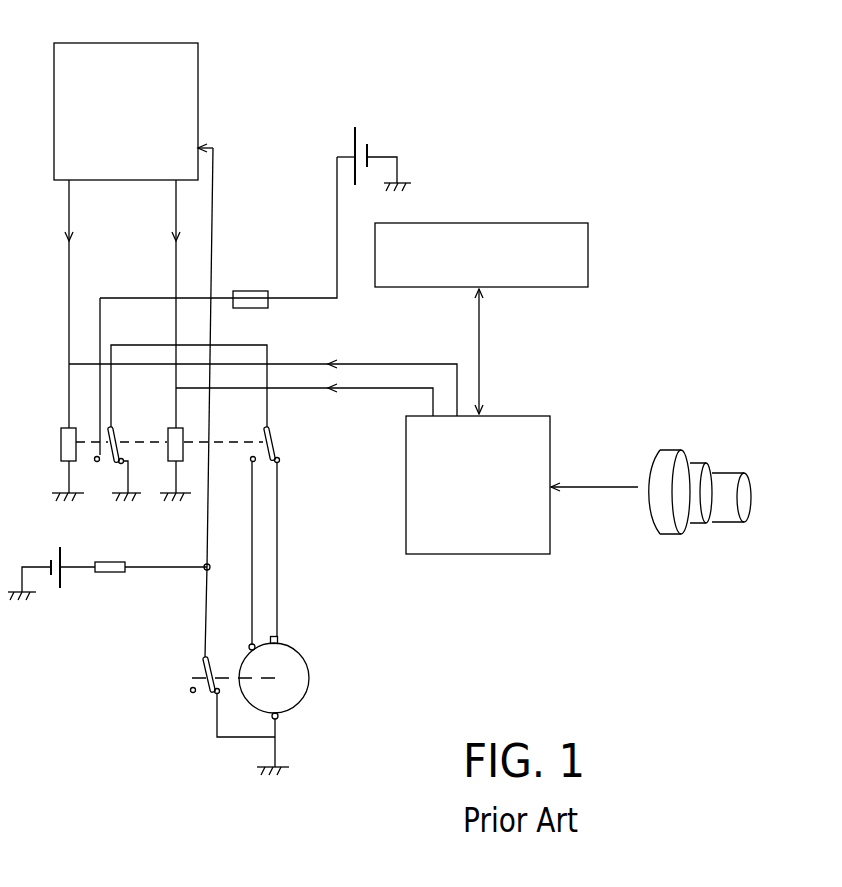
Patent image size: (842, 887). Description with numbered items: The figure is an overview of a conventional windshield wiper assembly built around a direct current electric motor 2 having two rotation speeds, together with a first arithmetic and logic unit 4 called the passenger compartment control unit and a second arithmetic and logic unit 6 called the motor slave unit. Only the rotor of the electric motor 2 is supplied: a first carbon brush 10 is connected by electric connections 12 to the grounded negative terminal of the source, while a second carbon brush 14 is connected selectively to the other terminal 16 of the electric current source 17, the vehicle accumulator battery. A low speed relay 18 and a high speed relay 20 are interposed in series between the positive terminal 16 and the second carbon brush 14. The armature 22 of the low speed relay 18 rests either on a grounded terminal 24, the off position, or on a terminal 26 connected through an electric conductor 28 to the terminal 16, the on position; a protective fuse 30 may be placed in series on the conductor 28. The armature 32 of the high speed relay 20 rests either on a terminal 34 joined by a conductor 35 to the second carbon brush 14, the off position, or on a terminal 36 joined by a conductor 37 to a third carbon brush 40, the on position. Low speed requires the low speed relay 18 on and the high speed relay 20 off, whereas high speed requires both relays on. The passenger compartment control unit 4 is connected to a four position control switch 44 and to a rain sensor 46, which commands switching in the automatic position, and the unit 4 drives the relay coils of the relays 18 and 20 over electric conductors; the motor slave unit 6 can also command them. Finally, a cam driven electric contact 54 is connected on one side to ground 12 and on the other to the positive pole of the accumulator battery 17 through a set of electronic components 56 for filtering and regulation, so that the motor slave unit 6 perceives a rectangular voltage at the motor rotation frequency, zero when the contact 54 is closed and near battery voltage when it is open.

The electric motor 2 is at (312, 676).
The first arithmetic and logic unit 4 is at (468, 555).
The second arithmetic and logic unit 6 is at (127, 43).
The first carbon brush 10 is at (283, 717).
The electric connections 12 is at (283, 766).
The second carbon brush 14 is at (280, 642).
The terminal 16 is at (336, 190).
The electric current source 17 is at (367, 133).
The low speed relay 18 is at (121, 437).
The high speed relay 20 is at (191, 432).
The armature 22 is at (120, 448).
The terminal 24 is at (120, 503).
The terminal 26 is at (96, 462).
The electric conductor 28 is at (99, 292).
The protective fuse 30 is at (240, 291).
The armature 32 is at (273, 437).
The terminal 34 is at (281, 459).
The conductor 35 is at (278, 565).
The terminal 36 is at (256, 463).
The conductor 37 is at (253, 532).
The third carbon brush 40 is at (255, 645).
The control switch 44 is at (705, 537).
The rain sensor 46 is at (485, 223).
The electric contact 54 is at (200, 666).
The set of electronic components 56 is at (118, 574).